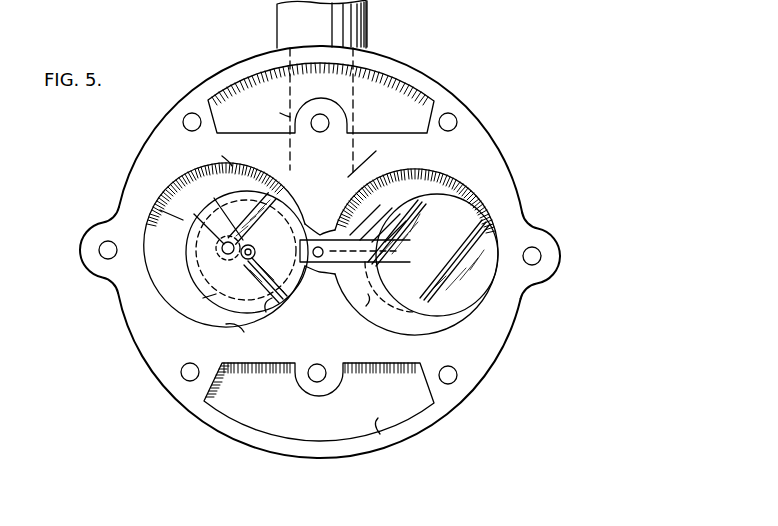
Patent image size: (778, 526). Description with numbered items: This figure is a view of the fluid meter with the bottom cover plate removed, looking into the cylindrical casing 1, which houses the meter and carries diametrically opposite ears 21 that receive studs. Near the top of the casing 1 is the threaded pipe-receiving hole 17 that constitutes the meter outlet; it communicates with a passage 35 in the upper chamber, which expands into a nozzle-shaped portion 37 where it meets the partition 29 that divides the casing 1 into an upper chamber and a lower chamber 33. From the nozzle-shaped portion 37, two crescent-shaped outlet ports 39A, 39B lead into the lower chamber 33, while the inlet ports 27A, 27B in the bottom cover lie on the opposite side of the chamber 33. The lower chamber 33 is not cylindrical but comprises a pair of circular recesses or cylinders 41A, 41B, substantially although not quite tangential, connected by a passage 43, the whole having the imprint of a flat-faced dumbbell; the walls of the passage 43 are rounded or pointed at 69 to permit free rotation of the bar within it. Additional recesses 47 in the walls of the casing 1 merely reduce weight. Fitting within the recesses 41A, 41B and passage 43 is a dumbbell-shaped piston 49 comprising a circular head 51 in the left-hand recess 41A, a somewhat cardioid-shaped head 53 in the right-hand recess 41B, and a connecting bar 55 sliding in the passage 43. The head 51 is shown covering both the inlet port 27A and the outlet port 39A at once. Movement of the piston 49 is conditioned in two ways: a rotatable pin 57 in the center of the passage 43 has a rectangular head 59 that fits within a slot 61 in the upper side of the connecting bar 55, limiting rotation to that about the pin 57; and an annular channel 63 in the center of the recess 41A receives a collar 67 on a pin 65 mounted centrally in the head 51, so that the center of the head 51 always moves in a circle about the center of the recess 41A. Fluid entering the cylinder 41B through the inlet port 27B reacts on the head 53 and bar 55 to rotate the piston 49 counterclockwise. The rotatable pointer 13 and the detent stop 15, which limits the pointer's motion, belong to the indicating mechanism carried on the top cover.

The cylindrical casing 1 is at (522, 219).
The rotatable handle or pointer 13 is at (194, 222).
The detent stop 15 is at (215, 209).
The threaded pipe-receiving hole 17 is at (369, 48).
The ears 21 is at (100, 276).
The inlet port 27A is at (272, 300).
The inlet port 27B is at (368, 312).
The partition 29 is at (372, 422).
The lower chamber 33 is at (160, 210).
The passage 35 is at (268, 110).
The nozzle-shaped portion 37 is at (377, 157).
The outlet port 39A is at (207, 151).
The outlet port 39B is at (404, 172).
The circular recess or cylinder 41A is at (224, 330).
The circular recess or cylinder 41B is at (388, 334).
The passage 43 is at (320, 272).
The additional recesses 47 is at (264, 74).
The piston 49 is at (484, 298).
The circular head or lobe 51 is at (190, 276).
The cardioid-shaped head or lobe 53 is at (445, 306).
The connecting bar 55 is at (322, 232).
The rotatable pin 57 is at (318, 226).
The rectangular head 59 is at (261, 219).
The slot 61 is at (408, 250).
The annular channel 63 is at (201, 240).
The pin 65 is at (194, 302).
The collar 67 is at (220, 322).
The rounded or pointed walls 69 is at (300, 250).